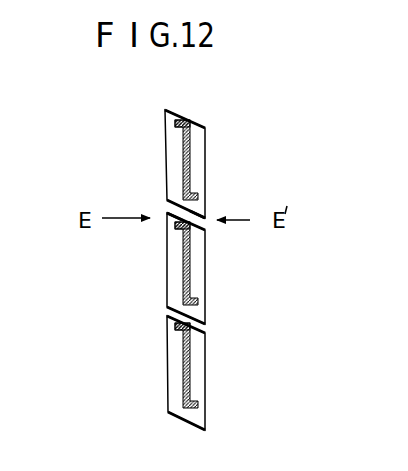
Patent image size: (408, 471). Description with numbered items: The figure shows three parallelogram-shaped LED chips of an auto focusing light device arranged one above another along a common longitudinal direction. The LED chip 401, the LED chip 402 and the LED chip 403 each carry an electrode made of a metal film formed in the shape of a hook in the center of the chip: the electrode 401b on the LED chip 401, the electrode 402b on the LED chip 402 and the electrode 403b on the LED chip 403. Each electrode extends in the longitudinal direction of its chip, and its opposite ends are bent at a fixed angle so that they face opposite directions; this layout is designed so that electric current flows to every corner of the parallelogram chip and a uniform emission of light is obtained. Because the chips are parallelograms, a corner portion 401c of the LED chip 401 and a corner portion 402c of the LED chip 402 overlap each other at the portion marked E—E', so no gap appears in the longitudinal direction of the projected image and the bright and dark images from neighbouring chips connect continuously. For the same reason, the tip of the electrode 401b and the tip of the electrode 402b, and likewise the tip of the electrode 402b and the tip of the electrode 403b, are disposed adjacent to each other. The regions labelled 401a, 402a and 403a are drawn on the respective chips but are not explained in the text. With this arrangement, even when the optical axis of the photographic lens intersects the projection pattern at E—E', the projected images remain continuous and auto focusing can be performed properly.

The LED chip 401 is at (208, 158).
The contact pad of first electrode plate 401a is at (173, 124).
The electrode 401b is at (190, 162).
The corner portion 401c is at (203, 209).
The LED chip 402 is at (209, 276).
The contact pad of second electrode plate 402a is at (173, 250).
The electrode 402b is at (186, 272).
The corner portion 402c is at (166, 213).
The LED chip 403 is at (209, 366).
The contact pad of third electrode plate 403a is at (175, 345).
The electrode 403b is at (186, 372).